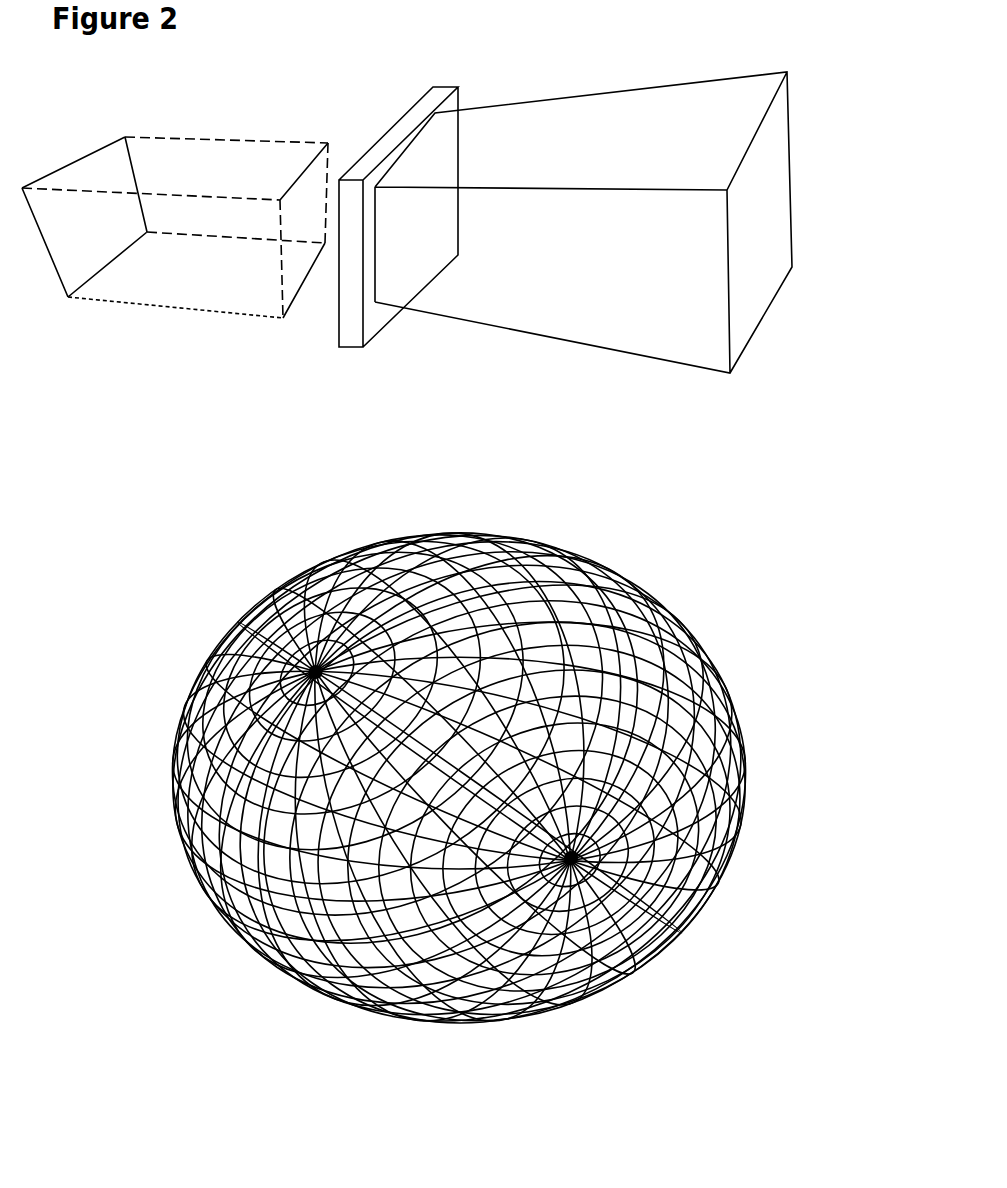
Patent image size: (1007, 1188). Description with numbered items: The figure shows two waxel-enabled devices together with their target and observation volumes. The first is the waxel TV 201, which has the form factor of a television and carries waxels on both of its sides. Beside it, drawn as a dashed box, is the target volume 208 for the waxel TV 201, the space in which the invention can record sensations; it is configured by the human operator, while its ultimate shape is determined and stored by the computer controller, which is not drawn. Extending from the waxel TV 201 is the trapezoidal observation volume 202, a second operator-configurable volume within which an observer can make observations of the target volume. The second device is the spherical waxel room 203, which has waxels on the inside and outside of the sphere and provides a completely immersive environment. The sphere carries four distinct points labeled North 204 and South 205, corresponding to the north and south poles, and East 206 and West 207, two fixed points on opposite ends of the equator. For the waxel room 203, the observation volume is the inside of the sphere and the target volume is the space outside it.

The waxel TV 201 is at (408, 192).
The observation volume 202 is at (583, 222).
The waxel room 203 is at (458, 774).
The North point 204 is at (215, 634).
The South point 205 is at (686, 917).
The East point 206 is at (726, 564).
The West point 207 is at (327, 1047).
The target volume 208 is at (175, 204).